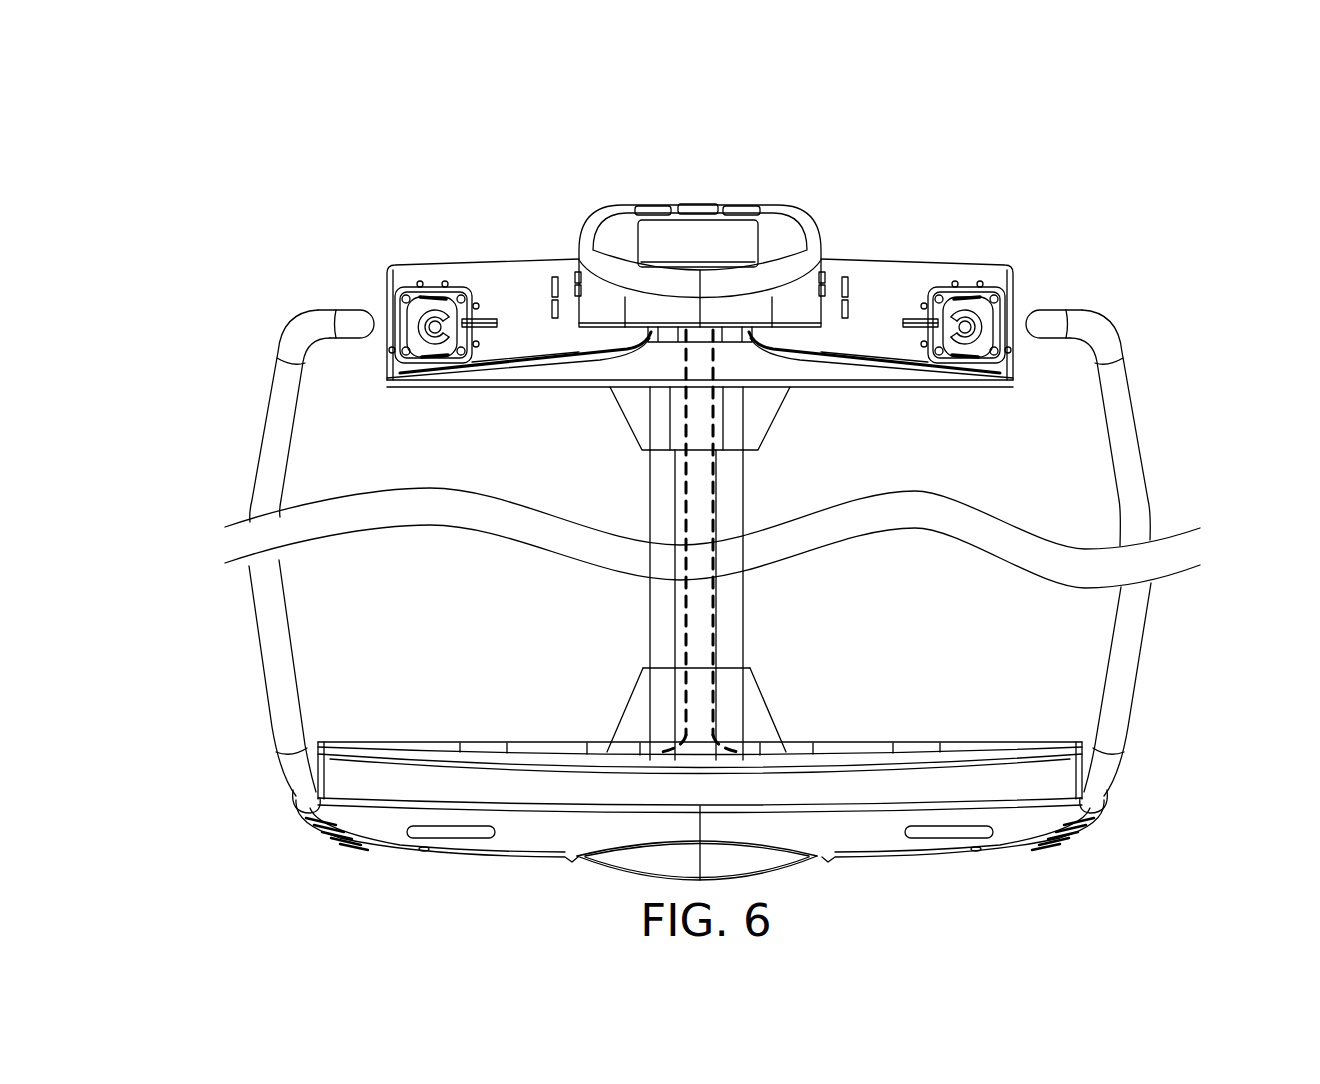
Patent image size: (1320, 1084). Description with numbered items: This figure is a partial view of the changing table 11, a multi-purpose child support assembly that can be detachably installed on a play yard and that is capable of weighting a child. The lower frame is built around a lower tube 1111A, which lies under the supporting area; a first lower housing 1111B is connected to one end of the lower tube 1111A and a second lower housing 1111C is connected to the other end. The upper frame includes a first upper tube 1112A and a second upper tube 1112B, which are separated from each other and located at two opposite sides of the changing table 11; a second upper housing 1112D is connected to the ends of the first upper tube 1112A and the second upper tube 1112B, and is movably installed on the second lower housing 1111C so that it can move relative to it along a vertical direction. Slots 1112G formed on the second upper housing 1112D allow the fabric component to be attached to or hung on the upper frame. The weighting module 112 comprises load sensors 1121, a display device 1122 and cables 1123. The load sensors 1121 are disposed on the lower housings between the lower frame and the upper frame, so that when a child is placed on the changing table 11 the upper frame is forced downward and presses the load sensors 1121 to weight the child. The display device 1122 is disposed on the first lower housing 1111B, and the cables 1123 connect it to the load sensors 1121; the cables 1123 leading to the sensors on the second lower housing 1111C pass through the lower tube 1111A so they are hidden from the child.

The changing table 11 is at (1117, 130).
The weighting module 112 is at (933, 117).
The load sensor 1121 is at (463, 286).
The display device 1122 is at (778, 226).
The cable 1123 is at (522, 357).
The lower tube 1111A is at (727, 590).
The first lower housing 1111B is at (420, 263).
The second lower housing 1111C is at (395, 848).
The first upper tube 1112A is at (1128, 648).
The second upper tube 1112B is at (272, 648).
The second upper housing 1112D is at (1015, 827).
The slot 1112G is at (461, 835).